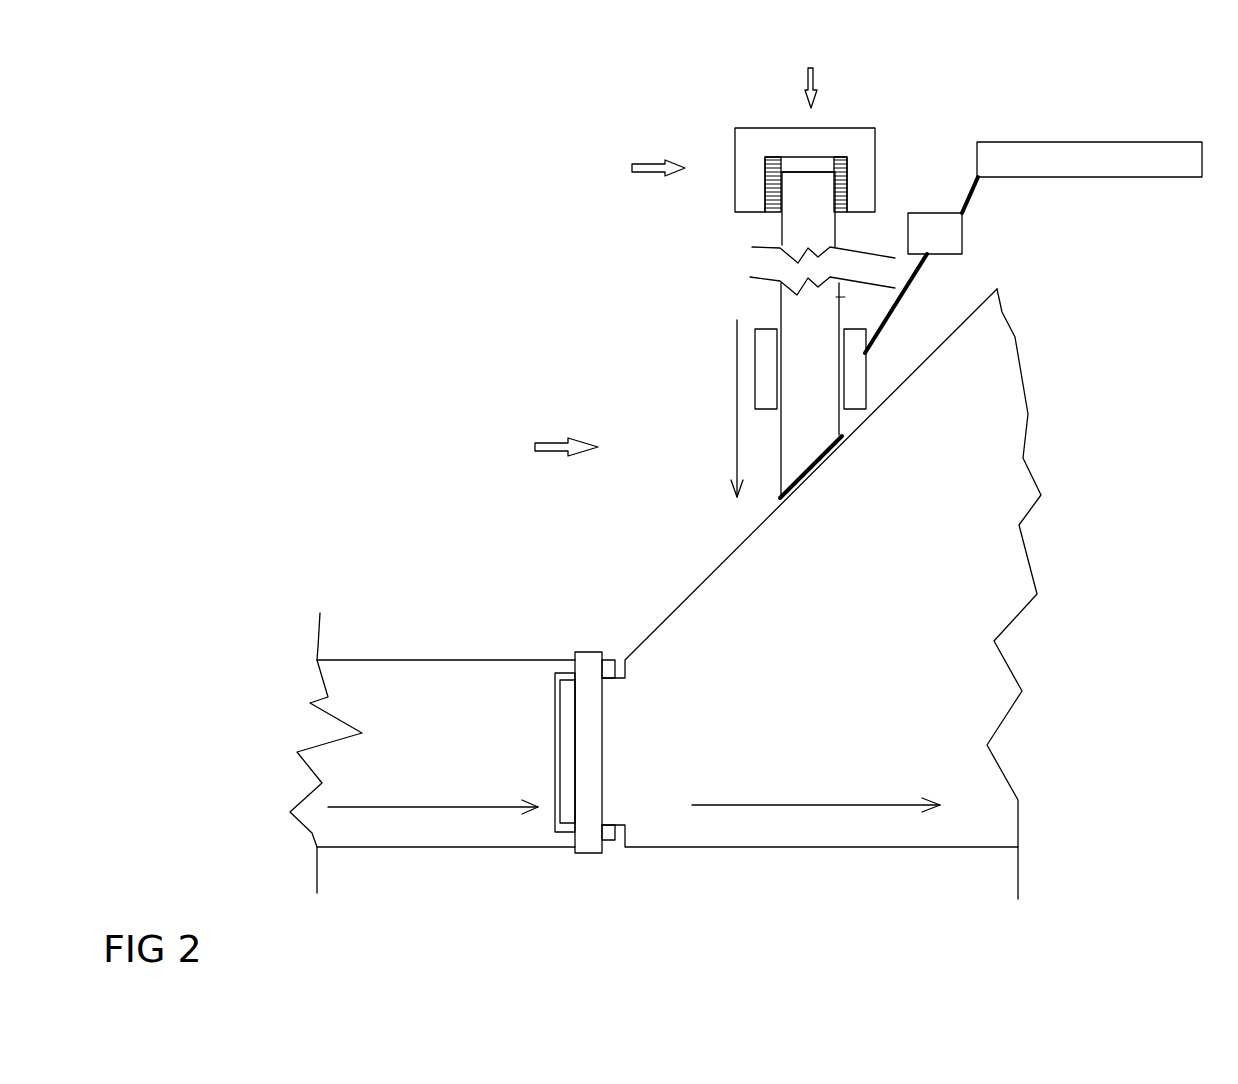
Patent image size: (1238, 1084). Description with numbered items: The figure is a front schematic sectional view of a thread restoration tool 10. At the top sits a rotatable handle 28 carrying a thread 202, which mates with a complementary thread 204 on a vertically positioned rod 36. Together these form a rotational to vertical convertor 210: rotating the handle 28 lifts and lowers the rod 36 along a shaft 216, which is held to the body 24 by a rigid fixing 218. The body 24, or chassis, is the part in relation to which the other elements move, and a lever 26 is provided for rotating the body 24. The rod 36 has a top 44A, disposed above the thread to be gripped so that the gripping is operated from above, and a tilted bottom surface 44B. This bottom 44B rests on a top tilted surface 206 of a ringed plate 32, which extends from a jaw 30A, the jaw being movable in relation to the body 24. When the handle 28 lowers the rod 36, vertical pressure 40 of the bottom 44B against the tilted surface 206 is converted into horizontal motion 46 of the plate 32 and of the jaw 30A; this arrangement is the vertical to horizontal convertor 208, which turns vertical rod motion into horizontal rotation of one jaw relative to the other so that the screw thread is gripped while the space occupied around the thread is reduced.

The thread restoration tool 10 is at (811, 74).
The thread of rod 204 is at (783, 160).
The rotatable handle 28 is at (835, 143).
The thread of handle 202 is at (778, 190).
The rotational to vertical convertor 210 is at (635, 168).
The rod 36 is at (807, 229).
The top of rod 44A is at (817, 182).
The bottom surface of rod 44B is at (813, 470).
The vertical pressure 40 is at (721, 408).
The shaft 216 is at (857, 380).
The body 24 is at (943, 235).
The rigid fixing 218 is at (900, 307).
The lever 26 is at (1152, 158).
The top tilted surface of plate 206 is at (718, 563).
The ringed plate 32 is at (885, 656).
The horizontal motion 46 is at (816, 793).
The jaw 30A is at (470, 754).
The vertical to horizontal convertor 208 is at (542, 447).